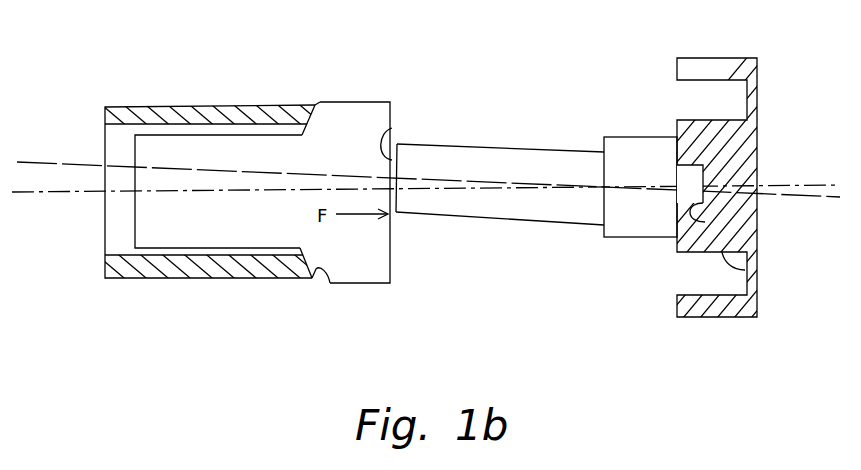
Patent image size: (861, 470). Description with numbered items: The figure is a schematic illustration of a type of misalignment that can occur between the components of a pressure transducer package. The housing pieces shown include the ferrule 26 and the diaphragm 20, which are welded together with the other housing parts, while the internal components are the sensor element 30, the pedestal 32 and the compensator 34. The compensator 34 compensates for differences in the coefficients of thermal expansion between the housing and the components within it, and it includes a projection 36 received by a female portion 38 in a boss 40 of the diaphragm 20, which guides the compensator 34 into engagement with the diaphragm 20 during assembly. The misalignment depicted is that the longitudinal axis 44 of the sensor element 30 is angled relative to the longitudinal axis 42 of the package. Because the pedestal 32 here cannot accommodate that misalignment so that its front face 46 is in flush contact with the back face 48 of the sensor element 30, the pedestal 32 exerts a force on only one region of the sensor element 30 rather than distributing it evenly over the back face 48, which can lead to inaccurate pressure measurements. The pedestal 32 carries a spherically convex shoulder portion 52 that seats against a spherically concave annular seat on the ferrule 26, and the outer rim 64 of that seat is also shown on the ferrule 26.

The diaphragm 20 is at (757, 93).
The ferrule 26 is at (207, 107).
The sensor element 30 is at (508, 148).
The pedestal 32 is at (346, 102).
The compensator 34 is at (633, 137).
The projection 36 is at (703, 178).
The female portion 38 is at (705, 222).
The boss 40 is at (745, 270).
The longitudinal axis of package 42 is at (60, 192).
The longitudinal axis of sensor element 44 is at (60, 162).
The front face 46 is at (392, 117).
The back face 48 is at (394, 130).
The spherically convex shoulder portion 52 is at (302, 110).
The outer rim 64 is at (327, 283).